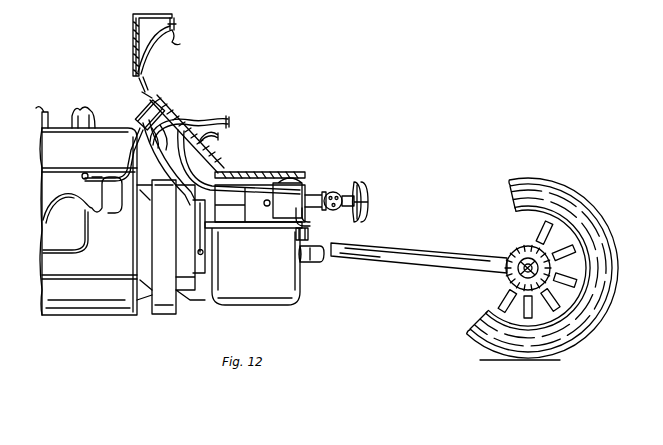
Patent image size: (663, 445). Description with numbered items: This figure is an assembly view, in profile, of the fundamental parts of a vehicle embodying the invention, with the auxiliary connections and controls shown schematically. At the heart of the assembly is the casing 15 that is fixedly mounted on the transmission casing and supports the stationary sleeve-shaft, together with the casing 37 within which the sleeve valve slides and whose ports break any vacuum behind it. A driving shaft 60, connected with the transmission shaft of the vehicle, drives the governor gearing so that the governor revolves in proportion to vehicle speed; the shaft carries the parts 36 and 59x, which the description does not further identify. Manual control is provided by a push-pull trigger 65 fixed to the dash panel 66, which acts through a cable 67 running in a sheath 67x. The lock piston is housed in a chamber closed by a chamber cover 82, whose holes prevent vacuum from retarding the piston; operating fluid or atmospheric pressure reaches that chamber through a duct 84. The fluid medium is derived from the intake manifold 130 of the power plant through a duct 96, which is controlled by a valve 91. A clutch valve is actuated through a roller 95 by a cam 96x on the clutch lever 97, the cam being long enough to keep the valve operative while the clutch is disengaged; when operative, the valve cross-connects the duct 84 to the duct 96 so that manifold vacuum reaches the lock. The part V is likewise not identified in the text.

The casing 15 is at (230, 212).
The hand wheel 36 is at (366, 191).
The casing 37 is at (308, 216).
The fitting 59x is at (306, 233).
The driving shaft 60 is at (316, 261).
The push-pull trigger 65 is at (178, 26).
The dash panel 66 is at (178, 44).
The cable 67 is at (144, 94).
The sheath 67x is at (148, 96).
The chamber cover 82 is at (333, 197).
The duct 84 is at (158, 164).
The valve 91 is at (137, 115).
The roller 95 is at (162, 140).
The duct 96 is at (125, 168).
The cam 96x is at (183, 122).
The clutch lever 97 is at (230, 122).
The valve V is at (212, 138).
The intake manifold 130 is at (105, 212).